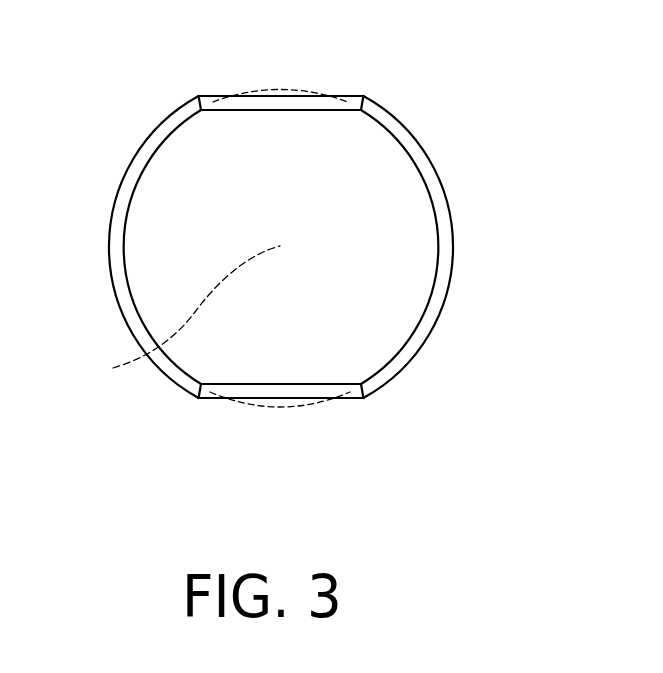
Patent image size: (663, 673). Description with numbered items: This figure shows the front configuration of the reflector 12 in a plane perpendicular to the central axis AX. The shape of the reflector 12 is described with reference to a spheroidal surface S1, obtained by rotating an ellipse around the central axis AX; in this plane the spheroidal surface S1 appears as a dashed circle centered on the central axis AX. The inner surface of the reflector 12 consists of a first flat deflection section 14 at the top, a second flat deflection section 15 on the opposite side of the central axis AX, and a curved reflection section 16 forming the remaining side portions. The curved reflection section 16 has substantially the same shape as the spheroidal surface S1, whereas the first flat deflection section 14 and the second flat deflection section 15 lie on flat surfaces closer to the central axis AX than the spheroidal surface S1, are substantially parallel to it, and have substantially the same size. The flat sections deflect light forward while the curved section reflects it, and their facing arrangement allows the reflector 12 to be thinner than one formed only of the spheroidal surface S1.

The reflector 12 is at (256, 232).
The first flat deflection section 14 is at (286, 110).
The second flat deflection section 15 is at (286, 386).
The curved reflection section 16 is at (119, 236).
The central axis AX is at (175, 316).
The spheroidal surface S1 is at (298, 404).